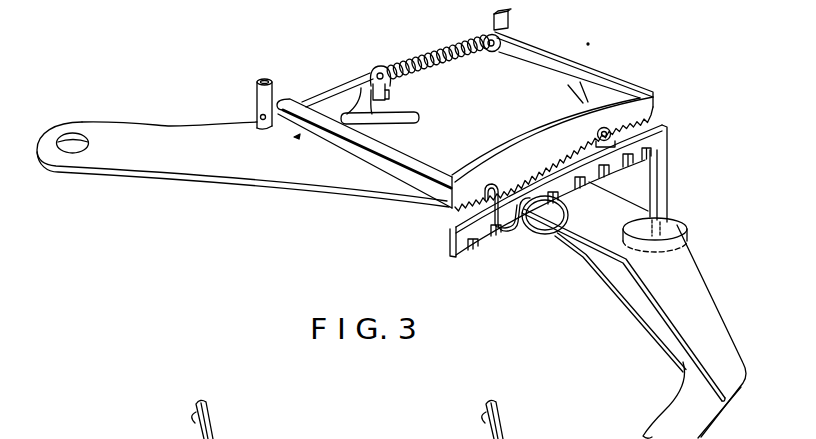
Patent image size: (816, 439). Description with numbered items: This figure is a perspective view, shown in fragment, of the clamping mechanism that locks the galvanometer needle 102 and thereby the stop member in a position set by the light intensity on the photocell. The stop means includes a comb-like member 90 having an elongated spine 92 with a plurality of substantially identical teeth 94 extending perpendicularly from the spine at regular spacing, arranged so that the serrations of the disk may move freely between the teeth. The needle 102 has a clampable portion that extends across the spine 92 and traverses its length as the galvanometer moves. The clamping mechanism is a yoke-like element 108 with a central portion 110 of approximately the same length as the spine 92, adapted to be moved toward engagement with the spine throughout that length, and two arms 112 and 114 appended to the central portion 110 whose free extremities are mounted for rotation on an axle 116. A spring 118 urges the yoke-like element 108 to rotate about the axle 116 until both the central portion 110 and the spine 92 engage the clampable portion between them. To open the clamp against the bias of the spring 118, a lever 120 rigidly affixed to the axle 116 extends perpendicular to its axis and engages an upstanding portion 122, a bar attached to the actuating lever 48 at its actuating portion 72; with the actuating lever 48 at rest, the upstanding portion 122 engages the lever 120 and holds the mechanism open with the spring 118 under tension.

The actuating lever 48 is at (603, 243).
The actuating portion 72 is at (421, 119).
The comb-like member 90 is at (672, 148).
The elongated spine 92 is at (465, 219).
The teeth 94 is at (457, 258).
The needle 102 is at (628, 313).
The yoke-like element 108 is at (663, 104).
The central portion 110 is at (548, 122).
The arm 112 is at (388, 168).
The arm 114 is at (588, 82).
The axle 116 is at (331, 88).
The spring 118 is at (432, 50).
The lever 120 is at (388, 93).
The upstanding portion 122 is at (359, 88).